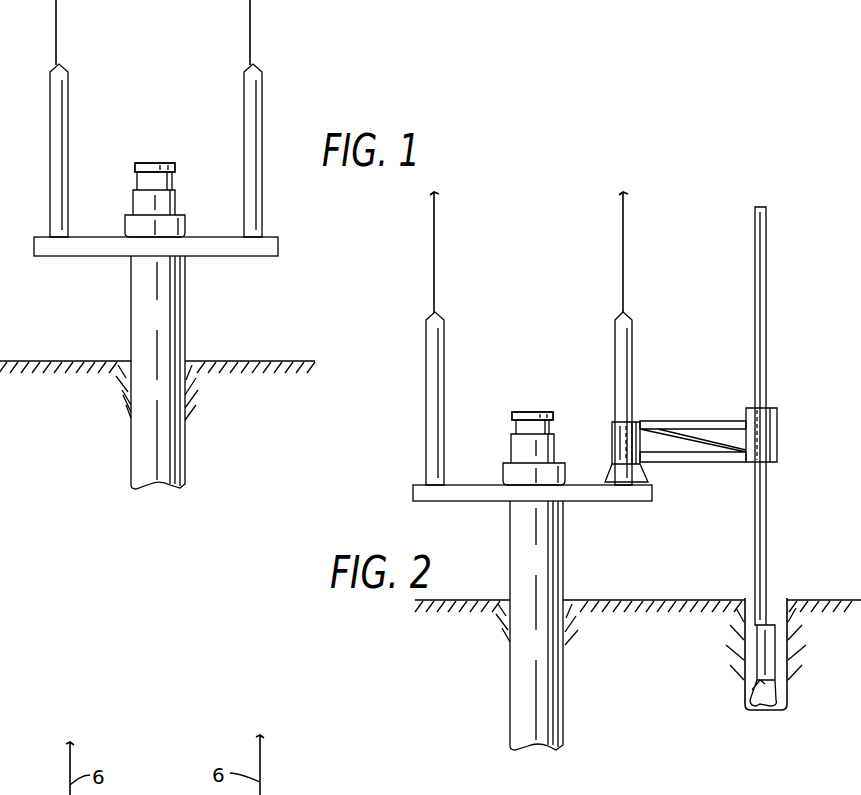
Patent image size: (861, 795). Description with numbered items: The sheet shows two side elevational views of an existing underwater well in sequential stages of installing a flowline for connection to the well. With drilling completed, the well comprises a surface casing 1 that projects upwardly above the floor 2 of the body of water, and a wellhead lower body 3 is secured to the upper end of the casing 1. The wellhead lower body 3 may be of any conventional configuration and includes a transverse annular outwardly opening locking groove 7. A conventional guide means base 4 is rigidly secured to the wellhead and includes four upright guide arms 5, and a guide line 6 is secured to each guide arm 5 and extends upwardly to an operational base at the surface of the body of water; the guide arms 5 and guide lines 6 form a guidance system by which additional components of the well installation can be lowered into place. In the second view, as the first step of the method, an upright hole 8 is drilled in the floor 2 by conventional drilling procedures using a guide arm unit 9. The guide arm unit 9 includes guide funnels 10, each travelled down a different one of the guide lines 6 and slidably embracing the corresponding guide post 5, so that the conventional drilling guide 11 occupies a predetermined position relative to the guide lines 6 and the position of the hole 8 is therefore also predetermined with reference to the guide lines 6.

In FIG. 1, the surface casing 1 is at (135, 305).
In FIG. 2, the surface casing 1 is at (511, 540).
In FIG. 1, the floor 2 is at (268, 360).
In FIG. 2, the floor 2 is at (498, 600).
In FIG. 1, the wellhead lower body 3 is at (178, 198).
In FIG. 2, the wellhead lower body 3 is at (556, 452).
In FIG. 1, the guide means base 4 is at (92, 257).
In FIG. 2, the guide means base 4 is at (488, 502).
In FIG. 1, the guide arm 5 is at (68, 100).
In FIG. 2, the guide arm 5 is at (446, 350).
In FIG. 1, the guide line 6 is at (56, 38).
In FIG. 2, the guide line 6 is at (434, 270).
In FIG. 1, the locking groove 7 is at (135, 175).
In FIG. 2, the locking groove 7 is at (512, 424).
In FIG. 2, the upright hole 8 is at (778, 598).
In FIG. 2, the guide arm unit 9 is at (712, 420).
In FIG. 2, the guide funnel 10 is at (611, 432).
In FIG. 2, the drilling guide 11 is at (780, 440).